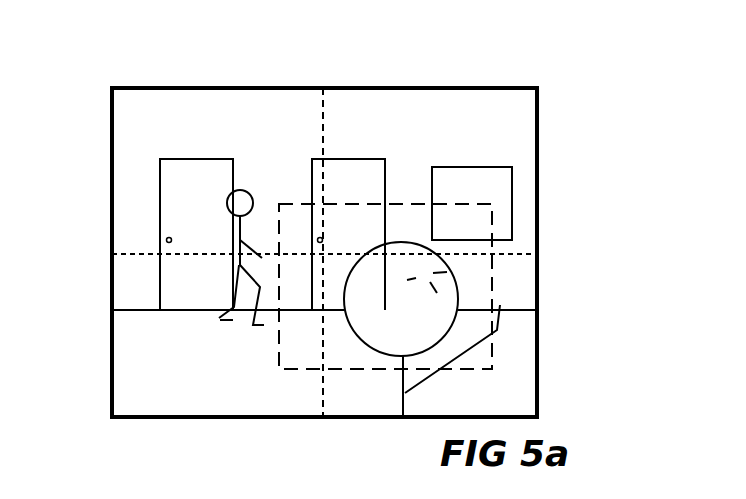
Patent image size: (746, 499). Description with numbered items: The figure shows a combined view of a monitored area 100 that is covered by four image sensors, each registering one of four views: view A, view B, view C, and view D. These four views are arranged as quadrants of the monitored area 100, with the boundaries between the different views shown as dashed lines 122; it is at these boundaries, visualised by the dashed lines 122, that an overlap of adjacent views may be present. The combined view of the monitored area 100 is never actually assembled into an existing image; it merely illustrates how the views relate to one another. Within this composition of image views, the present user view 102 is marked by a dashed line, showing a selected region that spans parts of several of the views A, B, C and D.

The monitored area 100 is at (518, 51).
The user view 102 is at (492, 213).
The dashed lines 122 is at (112, 255).
The view A is at (122, 160).
The view B is at (524, 132).
The view C is at (122, 352).
The view D is at (527, 371).